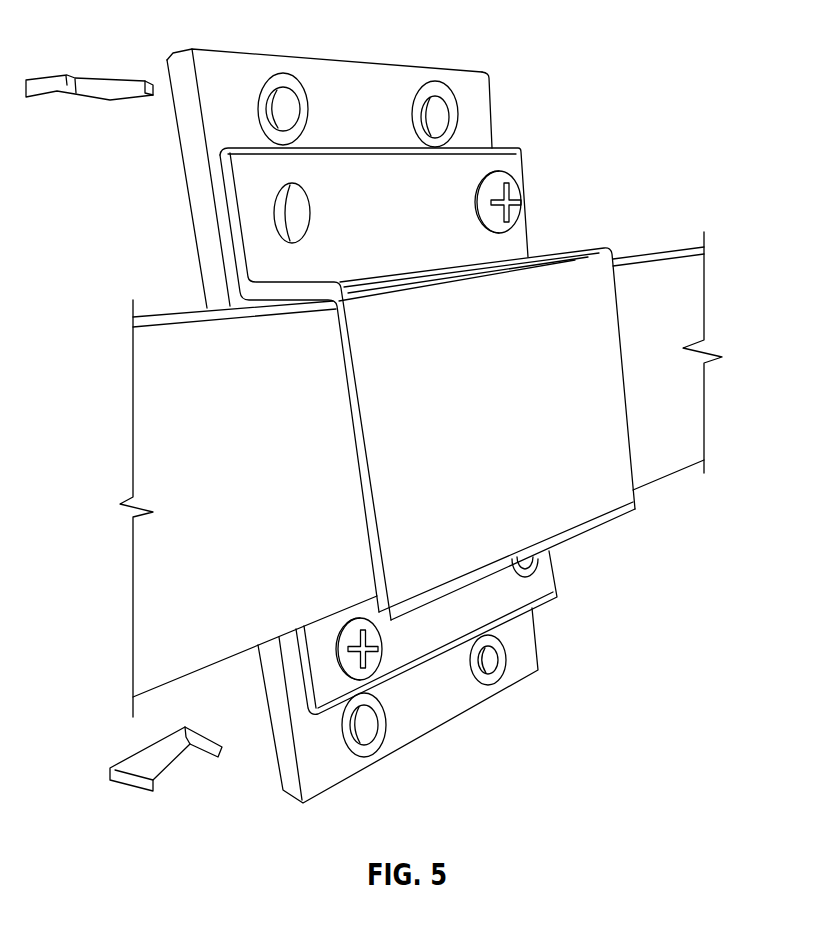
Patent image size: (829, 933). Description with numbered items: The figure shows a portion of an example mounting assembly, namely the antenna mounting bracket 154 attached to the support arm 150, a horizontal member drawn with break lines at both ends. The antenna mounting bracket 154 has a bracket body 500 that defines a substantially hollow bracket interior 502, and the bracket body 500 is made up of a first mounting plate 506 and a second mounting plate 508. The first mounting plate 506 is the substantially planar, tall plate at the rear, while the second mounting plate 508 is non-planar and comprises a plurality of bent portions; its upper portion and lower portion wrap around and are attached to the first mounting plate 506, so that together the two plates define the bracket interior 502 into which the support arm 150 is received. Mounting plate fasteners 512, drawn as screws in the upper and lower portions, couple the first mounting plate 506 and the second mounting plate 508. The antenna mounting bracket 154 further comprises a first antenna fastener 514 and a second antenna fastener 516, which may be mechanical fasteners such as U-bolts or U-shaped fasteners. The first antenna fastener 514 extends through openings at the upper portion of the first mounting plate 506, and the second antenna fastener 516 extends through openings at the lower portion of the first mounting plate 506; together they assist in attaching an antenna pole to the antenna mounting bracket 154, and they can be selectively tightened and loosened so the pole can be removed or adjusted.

The support arm 150 is at (652, 464).
The antenna mounting bracket 154 is at (100, 44).
The bracket body 500 is at (461, 69).
The bracket interior 502 is at (356, 455).
The first mounting plate 506 is at (478, 95).
The second mounting plate 508 is at (592, 248).
The mounting plate fastener 512 is at (522, 209).
The first antenna fastener 514 is at (96, 102).
The second antenna fastener 516 is at (175, 763).